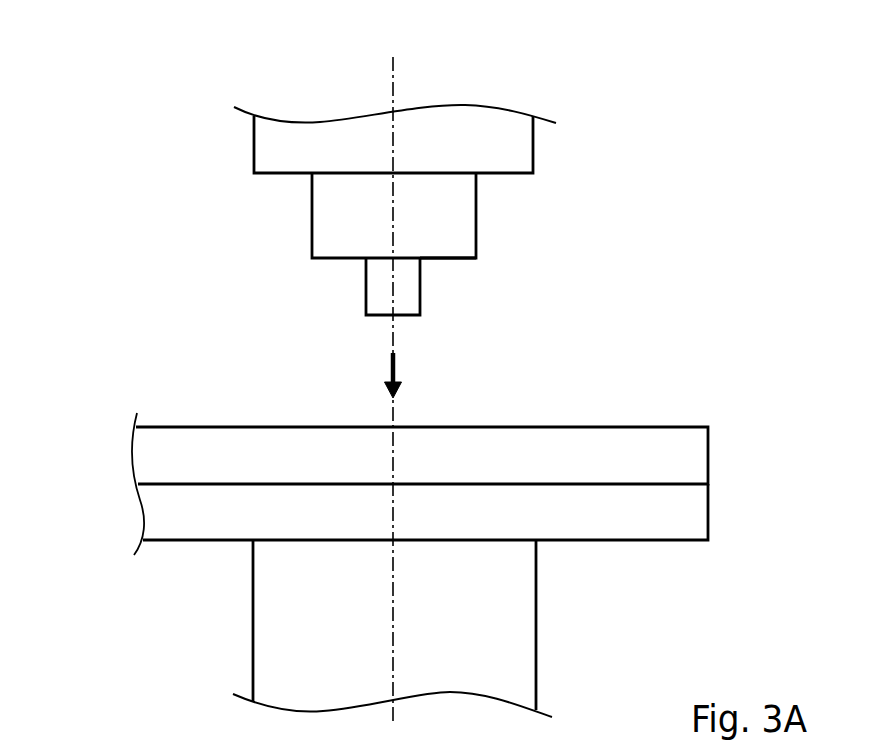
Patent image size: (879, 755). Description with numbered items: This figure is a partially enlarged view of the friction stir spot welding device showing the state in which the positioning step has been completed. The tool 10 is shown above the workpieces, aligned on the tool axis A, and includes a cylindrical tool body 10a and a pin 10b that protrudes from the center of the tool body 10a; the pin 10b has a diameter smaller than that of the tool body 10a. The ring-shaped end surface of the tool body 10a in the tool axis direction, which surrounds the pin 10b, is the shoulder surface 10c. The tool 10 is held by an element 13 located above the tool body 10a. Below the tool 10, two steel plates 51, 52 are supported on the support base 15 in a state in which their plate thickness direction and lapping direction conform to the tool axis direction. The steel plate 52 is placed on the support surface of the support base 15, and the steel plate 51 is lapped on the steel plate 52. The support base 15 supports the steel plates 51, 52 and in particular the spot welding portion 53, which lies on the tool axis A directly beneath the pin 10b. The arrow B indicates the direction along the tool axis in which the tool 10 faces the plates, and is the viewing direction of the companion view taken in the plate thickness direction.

The tool axis A is at (393, 74).
The arrow B is at (408, 375).
The tool 10 is at (412, 260).
The tool body 10a is at (476, 220).
The pin 10b is at (420, 306).
The shoulder surface 10c is at (450, 258).
The tool holder 13 is at (527, 152).
The support base 15 is at (527, 620).
The steel plate 51 is at (145, 452).
The steel plate 52 is at (157, 517).
The spot welding portion 53 is at (383, 445).